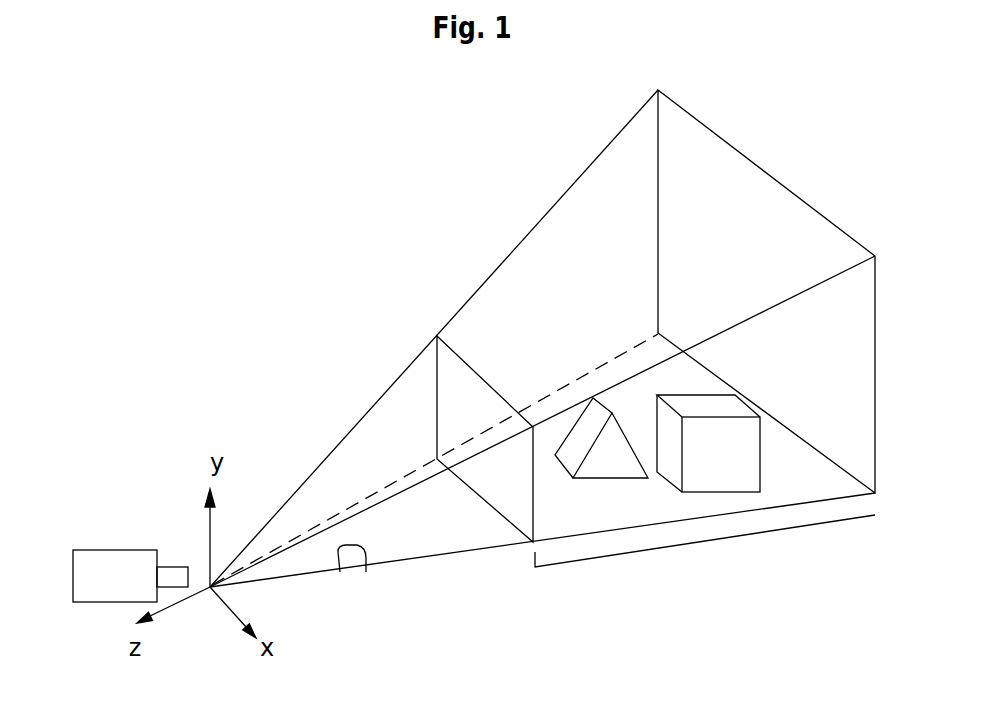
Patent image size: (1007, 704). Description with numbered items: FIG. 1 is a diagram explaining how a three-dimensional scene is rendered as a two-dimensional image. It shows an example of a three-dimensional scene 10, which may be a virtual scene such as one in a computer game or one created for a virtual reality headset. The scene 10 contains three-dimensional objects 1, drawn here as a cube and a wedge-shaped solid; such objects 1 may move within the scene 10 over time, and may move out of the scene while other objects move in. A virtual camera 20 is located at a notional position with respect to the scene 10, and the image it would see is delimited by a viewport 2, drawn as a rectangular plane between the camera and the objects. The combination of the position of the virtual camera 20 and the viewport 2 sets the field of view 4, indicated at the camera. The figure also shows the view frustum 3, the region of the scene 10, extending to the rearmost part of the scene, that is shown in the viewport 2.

The 3D objects 1 is at (712, 407).
The viewport 2 is at (462, 416).
The view frustum 3 is at (708, 542).
The field of view 4 is at (365, 572).
The 3D scene 10 is at (322, 240).
The virtual camera 20 is at (83, 550).